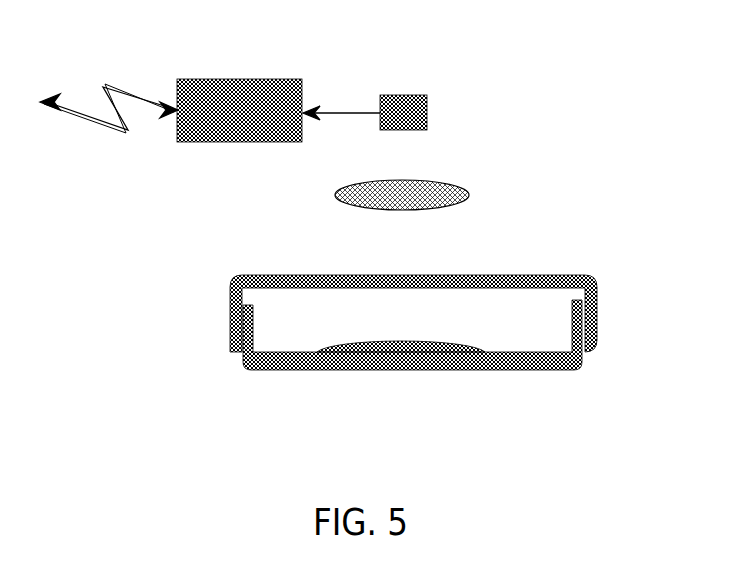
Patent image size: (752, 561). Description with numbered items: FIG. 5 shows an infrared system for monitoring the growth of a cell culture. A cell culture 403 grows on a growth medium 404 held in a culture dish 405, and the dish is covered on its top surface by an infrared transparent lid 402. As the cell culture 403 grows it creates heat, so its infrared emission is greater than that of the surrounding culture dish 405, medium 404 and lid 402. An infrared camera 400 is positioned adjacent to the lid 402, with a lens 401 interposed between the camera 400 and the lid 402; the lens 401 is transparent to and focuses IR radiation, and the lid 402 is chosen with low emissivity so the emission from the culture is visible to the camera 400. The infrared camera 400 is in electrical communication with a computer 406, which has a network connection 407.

The infrared camera 400 is at (407, 92).
The lens 401 is at (457, 185).
The infrared transparent lid 402 is at (515, 272).
The cell culture 403 is at (472, 342).
The growth medium 404 is at (500, 357).
The culture dish 405 is at (395, 368).
The computer 406 is at (248, 80).
The network connection 407 is at (88, 117).